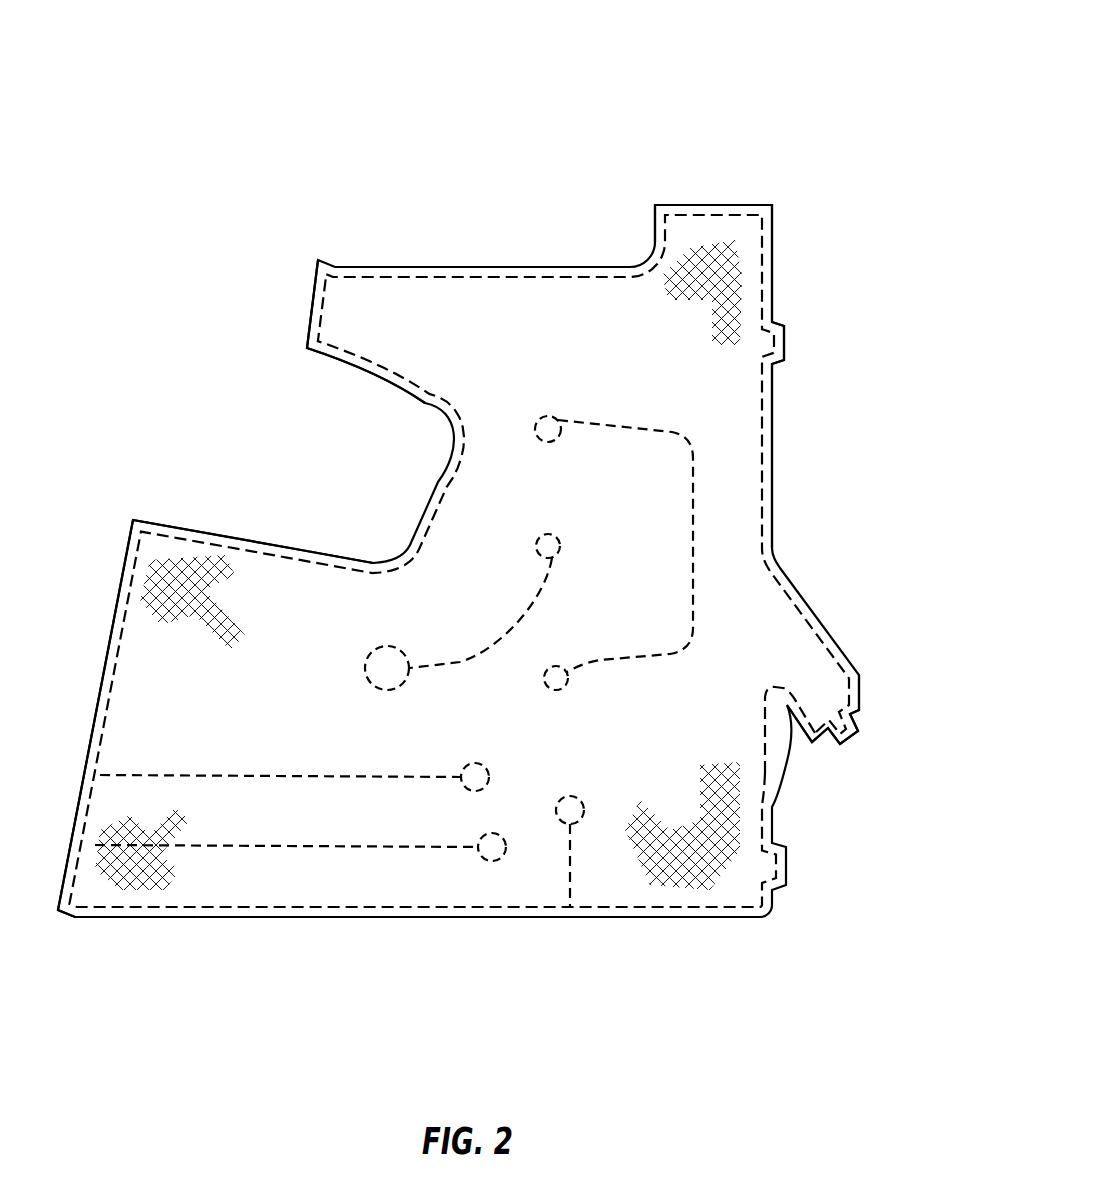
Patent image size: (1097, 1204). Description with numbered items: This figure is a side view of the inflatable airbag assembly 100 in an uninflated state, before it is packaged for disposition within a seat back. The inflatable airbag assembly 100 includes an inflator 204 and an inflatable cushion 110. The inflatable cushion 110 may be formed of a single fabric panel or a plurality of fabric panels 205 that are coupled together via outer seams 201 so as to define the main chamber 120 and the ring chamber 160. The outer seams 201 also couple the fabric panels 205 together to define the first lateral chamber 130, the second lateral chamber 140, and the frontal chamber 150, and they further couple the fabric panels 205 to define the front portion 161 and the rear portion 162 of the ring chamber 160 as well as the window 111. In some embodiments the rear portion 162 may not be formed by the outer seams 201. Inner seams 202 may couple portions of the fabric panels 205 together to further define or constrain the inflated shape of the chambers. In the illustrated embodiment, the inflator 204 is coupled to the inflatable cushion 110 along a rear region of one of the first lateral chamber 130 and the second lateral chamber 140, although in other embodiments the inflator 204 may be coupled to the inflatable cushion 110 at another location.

The inflatable airbag assembly 100 is at (621, 158).
The inflatable cushion 110 is at (523, 194).
The window 111 is at (225, 399).
The main chamber 120 is at (497, 964).
The first lateral chamber 130 is at (662, 520).
The second lateral chamber 140 is at (640, 580).
The frontal chamber 150 is at (143, 483).
The ring chamber 160 is at (456, 231).
The front portion 161 is at (288, 261).
The rear portion 162 is at (751, 186).
The outer seams 201 is at (157, 915).
The inner seams 202 is at (602, 663).
The inflator 204 is at (835, 724).
The fabric panels 205 is at (802, 292).